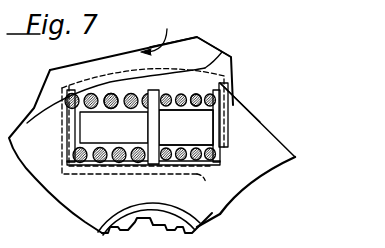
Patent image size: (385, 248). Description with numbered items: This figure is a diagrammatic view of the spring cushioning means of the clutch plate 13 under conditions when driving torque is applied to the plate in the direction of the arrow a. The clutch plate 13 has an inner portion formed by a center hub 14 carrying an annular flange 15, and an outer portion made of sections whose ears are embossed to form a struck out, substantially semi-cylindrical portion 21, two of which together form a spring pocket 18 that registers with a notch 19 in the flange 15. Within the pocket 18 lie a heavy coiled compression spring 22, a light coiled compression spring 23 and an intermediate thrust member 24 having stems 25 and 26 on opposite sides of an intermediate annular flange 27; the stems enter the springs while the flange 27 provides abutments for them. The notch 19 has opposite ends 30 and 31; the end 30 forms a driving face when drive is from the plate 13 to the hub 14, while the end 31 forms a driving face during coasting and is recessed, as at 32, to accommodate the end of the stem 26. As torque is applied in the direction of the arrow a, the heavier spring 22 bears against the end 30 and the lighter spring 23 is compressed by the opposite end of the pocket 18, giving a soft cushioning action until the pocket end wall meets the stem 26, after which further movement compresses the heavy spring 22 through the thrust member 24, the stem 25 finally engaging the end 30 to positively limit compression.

The arrow a is at (157, 34).
The clutch plate 13 is at (198, 39).
The center hub 14 is at (208, 218).
The annular flange 15 is at (283, 139).
The spring pocket 18 is at (222, 52).
The notch 19 is at (83, 164).
The embossed portion 21 is at (207, 183).
The heavy coiled compression spring 22 is at (110, 94).
The light coiled compression spring 23 is at (199, 93).
The thrust member 24 is at (154, 91).
The stem 25 is at (110, 128).
The stem 26 is at (187, 127).
The intermediate annular flange 27 is at (163, 121).
The notch end 30 is at (67, 138).
The notch end 31 is at (229, 152).
The recess 32 is at (228, 123).